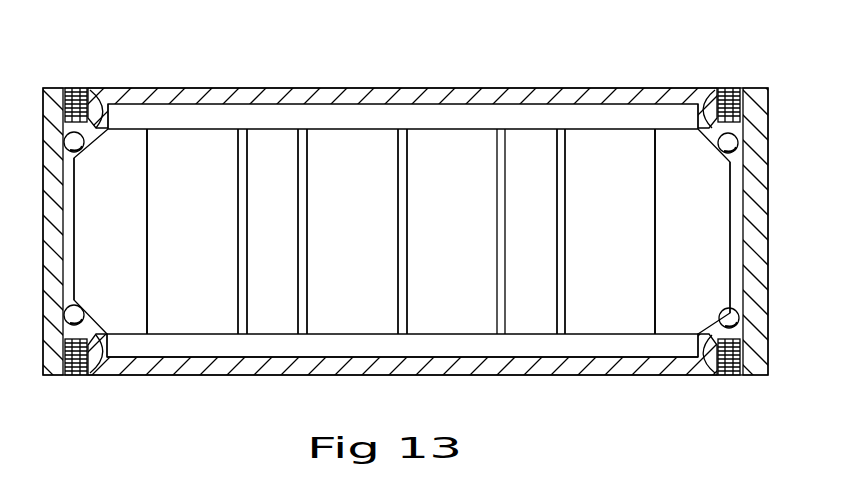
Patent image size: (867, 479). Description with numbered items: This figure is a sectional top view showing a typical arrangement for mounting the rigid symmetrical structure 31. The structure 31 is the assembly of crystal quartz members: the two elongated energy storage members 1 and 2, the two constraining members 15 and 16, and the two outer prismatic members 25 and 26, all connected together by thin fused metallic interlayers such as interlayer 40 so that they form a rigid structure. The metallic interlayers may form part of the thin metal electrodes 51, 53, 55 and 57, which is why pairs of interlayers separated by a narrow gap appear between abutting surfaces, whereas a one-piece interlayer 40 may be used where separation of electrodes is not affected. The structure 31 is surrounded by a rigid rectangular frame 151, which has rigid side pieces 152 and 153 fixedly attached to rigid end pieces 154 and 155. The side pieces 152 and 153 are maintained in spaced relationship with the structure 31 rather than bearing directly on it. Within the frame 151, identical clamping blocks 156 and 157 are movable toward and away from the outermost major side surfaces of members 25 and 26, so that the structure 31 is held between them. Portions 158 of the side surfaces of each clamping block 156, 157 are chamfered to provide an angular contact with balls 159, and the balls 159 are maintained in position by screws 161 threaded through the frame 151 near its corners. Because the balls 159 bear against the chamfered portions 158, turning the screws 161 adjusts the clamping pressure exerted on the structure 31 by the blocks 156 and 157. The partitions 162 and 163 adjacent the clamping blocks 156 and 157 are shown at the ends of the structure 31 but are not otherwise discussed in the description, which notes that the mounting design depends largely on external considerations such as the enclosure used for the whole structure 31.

The metallic interlayer 40 is at (403, 281).
The side piece 152 is at (357, 88).
The frame 151 is at (190, 378).
The side piece 153 is at (243, 375).
The end piece 154 is at (43, 180).
The end piece 155 is at (760, 172).
The rigid symmetrical structure 31 is at (333, 342).
The screw 161 is at (70, 88).
The chamfered portion 158 is at (99, 112).
The ball 159 is at (64, 142).
The left end partition 162 is at (147, 148).
The right end partition 163 is at (655, 263).
The electrode 51 is at (238, 241).
The electrode 53 is at (304, 232).
The electrode 55 is at (503, 235).
The electrode 57 is at (562, 233).
The clamping block 156 is at (92, 241).
The clamping block 157 is at (677, 243).
The outer crystal quartz prismatic member 25 is at (168, 178).
The crystal quartz prismatic member 1 is at (262, 178).
The crystal prismatic member 15 is at (338, 178).
The crystal prismatic member 16 is at (440, 178).
The crystal quartz prismatic member 2 is at (518, 178).
The outer crystal quartz prismatic member 26 is at (596, 178).